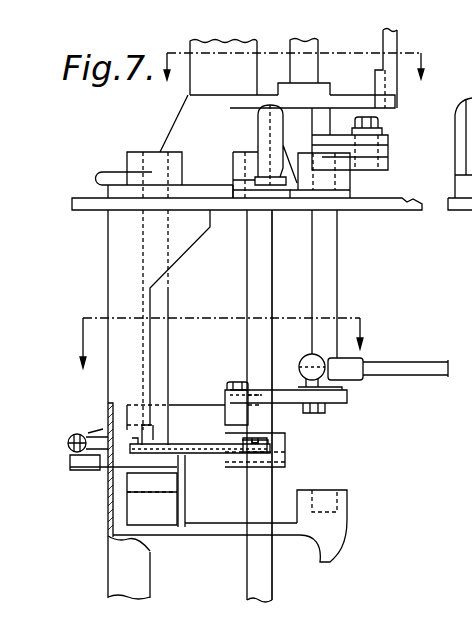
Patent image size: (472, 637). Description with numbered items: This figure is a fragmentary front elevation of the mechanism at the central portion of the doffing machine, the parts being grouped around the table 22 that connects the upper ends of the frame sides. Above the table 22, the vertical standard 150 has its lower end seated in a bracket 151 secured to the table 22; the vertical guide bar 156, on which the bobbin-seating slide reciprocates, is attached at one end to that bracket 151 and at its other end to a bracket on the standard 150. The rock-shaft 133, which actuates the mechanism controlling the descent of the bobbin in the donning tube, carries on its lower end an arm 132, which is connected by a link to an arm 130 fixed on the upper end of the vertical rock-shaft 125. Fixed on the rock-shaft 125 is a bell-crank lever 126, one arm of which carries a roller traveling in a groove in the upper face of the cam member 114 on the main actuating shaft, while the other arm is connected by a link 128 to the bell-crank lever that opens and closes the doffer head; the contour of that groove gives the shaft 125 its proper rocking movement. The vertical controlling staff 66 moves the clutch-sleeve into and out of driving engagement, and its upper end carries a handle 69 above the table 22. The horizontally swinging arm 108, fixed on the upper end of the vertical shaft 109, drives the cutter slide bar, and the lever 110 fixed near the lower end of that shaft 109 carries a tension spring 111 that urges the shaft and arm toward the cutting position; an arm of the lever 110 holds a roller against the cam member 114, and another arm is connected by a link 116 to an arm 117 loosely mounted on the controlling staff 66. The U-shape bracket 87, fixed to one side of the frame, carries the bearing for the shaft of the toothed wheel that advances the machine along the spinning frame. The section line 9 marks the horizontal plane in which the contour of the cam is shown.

The vertical standard 150 is at (208, 96).
The vertical guide bar 156 is at (395, 48).
The rock-shaft 133 is at (303, 47).
The bracket 151 is at (318, 100).
The handle 69 is at (262, 120).
The horizontally swinging arm 108 is at (108, 172).
The arm 132 is at (380, 132).
The arm 130 is at (356, 168).
The table 22 is at (366, 203).
The vertical shaft 109 is at (158, 307).
The controlling staff 66 is at (257, 268).
The vertical rock-shaft 125 is at (322, 277).
The section line 9- 9 is at (220, 337).
The link 128 is at (397, 371).
The bell-crank lever 126 is at (331, 398).
The arm 117 is at (287, 460).
The link 116 is at (217, 452).
The cam member 114 is at (184, 418).
The tension spring 111 is at (80, 424).
The lever 110 is at (106, 466).
The U-shape bracket 87 is at (333, 553).